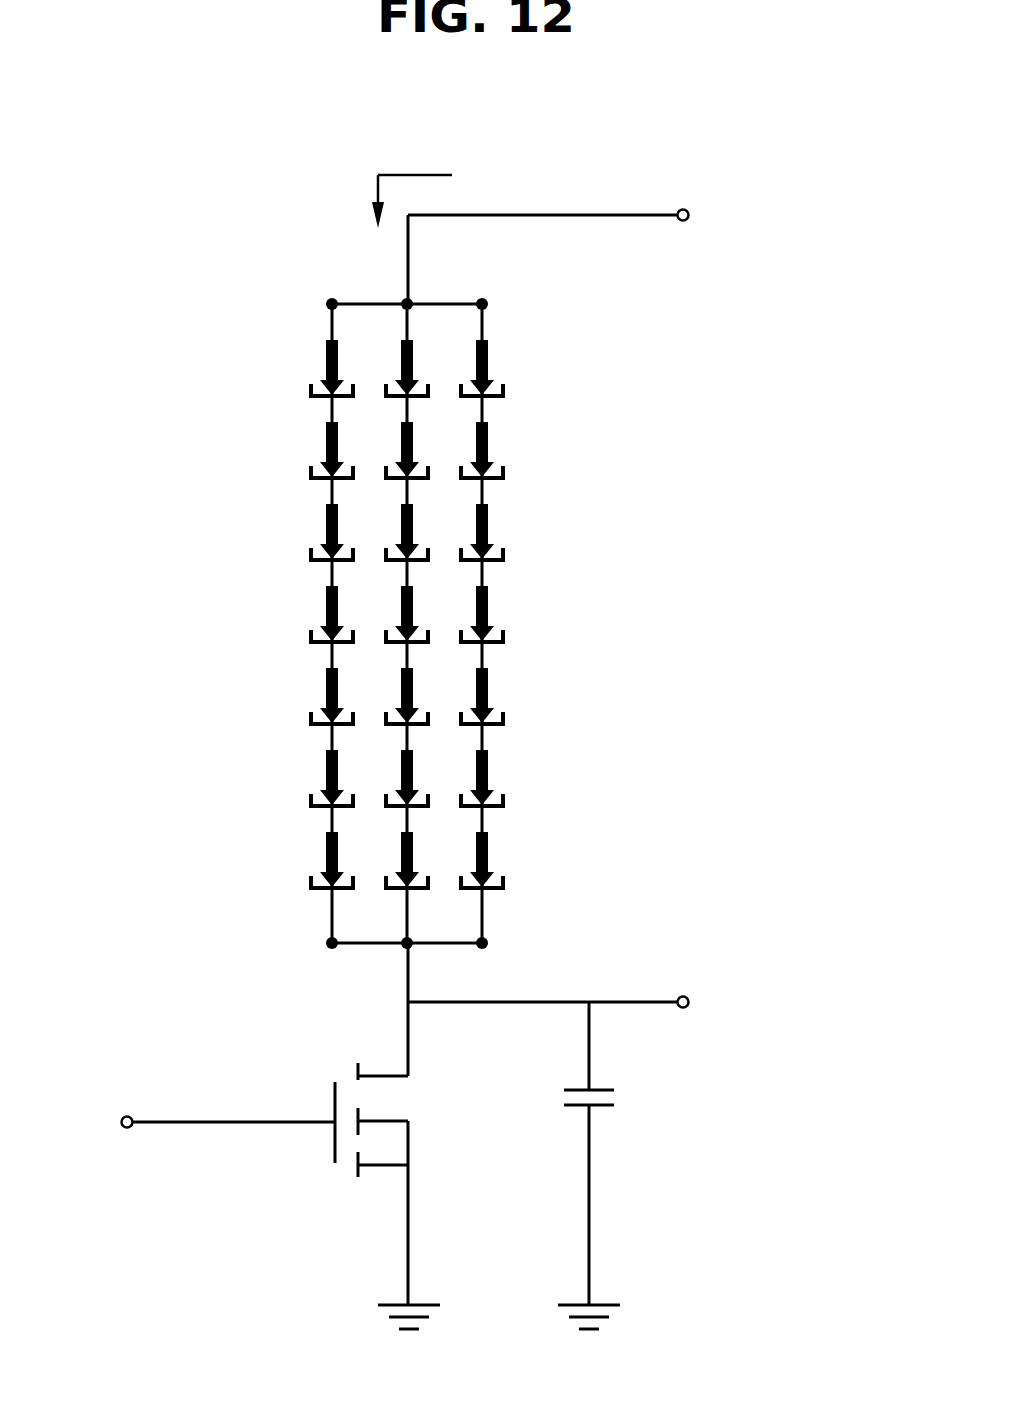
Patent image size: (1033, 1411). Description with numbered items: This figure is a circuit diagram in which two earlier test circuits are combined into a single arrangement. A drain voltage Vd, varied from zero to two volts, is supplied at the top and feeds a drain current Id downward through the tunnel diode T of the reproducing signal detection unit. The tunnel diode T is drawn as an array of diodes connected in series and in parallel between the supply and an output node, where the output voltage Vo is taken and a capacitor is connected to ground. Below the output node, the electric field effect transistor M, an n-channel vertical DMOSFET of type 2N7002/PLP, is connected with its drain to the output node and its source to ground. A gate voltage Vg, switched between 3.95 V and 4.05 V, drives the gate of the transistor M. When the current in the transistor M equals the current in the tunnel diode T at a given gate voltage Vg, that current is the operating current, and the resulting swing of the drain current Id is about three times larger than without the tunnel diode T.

The tunnel diode T is at (538, 363).
The electric field effect transistor M is at (302, 1154).
The drain voltage Vd is at (645, 252).
The output voltage Vo is at (572, 1009).
The gate voltage Vg is at (185, 1099).
The drain current Id is at (392, 203).